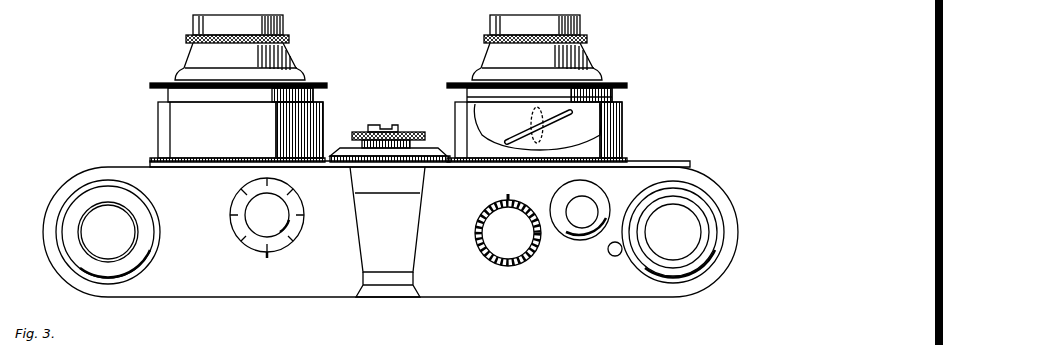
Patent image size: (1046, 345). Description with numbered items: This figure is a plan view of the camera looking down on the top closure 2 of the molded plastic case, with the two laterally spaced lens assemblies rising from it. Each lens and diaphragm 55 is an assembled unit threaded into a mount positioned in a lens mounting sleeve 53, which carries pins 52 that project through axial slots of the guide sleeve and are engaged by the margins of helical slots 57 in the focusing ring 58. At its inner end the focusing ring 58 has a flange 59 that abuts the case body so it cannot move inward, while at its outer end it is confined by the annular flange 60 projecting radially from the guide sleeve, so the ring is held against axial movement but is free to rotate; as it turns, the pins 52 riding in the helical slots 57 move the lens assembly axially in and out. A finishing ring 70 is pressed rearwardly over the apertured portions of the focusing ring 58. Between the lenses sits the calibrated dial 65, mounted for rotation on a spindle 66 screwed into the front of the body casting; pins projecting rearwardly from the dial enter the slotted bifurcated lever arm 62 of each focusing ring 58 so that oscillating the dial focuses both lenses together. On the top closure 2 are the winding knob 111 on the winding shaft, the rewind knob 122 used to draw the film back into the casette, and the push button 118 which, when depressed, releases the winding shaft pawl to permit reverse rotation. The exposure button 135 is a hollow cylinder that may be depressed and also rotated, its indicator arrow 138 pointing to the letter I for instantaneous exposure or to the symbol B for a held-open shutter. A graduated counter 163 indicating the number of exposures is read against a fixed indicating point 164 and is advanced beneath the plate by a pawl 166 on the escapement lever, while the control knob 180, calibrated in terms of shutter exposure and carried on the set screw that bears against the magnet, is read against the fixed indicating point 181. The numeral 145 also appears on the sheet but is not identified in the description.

The top closure 2 is at (58, 196).
The knob 122 is at (80, 235).
The knob 111 is at (700, 213).
The control knob 180 is at (252, 223).
The fixed indicating point 181 is at (267, 256).
The counter 163 is at (482, 243).
The fixed indicating point 164 is at (505, 196).
The exposure button 135 is at (588, 208).
The push button 118 is at (614, 257).
The spindle 66 is at (394, 163).
The bifurcated lever arm 62 is at (337, 155).
The calibrated dial 65 is at (399, 148).
The lens and diaphragm 55 is at (288, 68).
The lens mounting sleeve 53 is at (153, 83).
The finishing ring 70 is at (178, 118).
The flange 59 is at (156, 163).
The helical slots 57 is at (585, 68).
The annular flange 60 is at (610, 97).
The focusing ring 58 is at (592, 113).
The pins 52 is at (536, 126).
The pawl 166 is at (560, 338).
The indicator arrow 138 is at (599, 338).
The numeral 145 is at (644, 338).